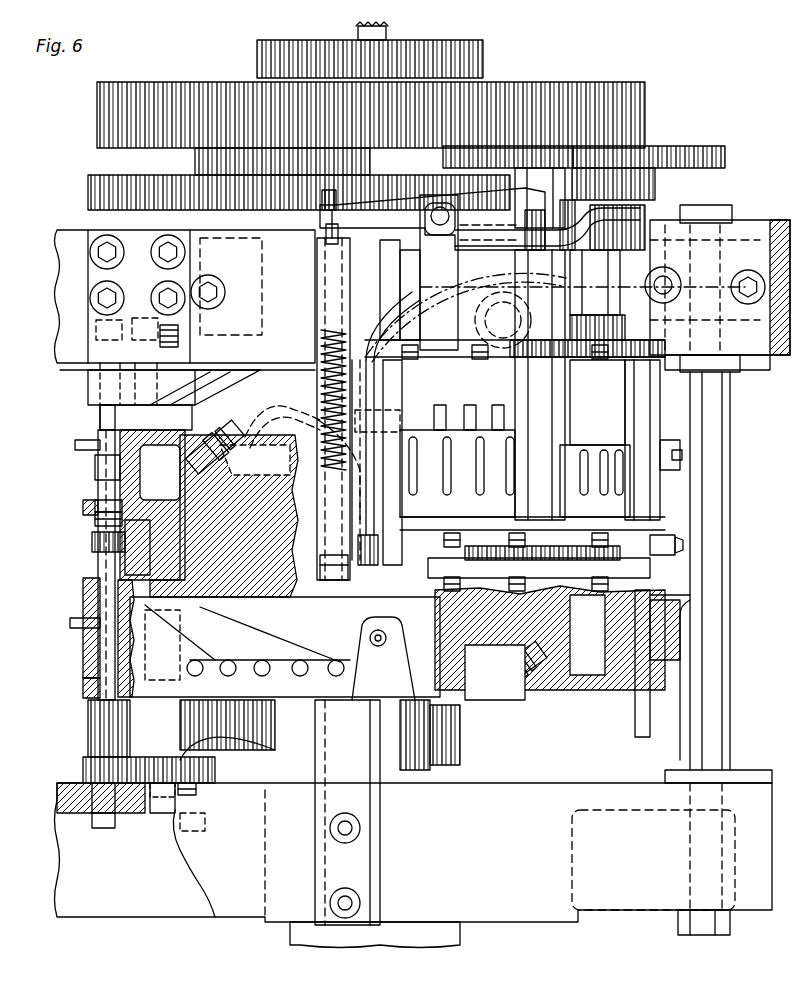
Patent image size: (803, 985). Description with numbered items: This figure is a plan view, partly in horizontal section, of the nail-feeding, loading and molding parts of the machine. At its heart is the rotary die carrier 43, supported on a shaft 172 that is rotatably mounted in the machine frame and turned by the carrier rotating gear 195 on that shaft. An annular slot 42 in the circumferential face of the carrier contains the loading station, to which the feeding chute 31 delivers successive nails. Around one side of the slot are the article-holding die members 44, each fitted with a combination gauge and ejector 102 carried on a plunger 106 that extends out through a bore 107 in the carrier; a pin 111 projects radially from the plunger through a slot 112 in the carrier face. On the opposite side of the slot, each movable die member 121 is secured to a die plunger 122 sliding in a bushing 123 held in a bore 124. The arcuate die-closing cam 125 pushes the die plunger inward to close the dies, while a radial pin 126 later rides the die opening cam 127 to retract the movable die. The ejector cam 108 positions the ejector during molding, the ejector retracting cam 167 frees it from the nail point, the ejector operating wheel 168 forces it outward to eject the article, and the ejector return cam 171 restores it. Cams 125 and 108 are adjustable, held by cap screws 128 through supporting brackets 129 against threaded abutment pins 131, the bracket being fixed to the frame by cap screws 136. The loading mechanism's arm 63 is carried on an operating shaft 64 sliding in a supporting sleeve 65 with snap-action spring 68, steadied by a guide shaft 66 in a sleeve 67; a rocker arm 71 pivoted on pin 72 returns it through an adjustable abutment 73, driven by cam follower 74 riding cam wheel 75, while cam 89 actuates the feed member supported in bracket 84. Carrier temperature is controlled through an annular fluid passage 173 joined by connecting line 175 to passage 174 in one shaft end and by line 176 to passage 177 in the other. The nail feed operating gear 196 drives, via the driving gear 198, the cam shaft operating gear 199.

The passage 177 is at (386, 32).
The carrier rotating gear 195 is at (590, 92).
The cam shaft operating gear 199 is at (572, 158).
The driving gear 198 is at (724, 148).
The nail feed operating gear 196 is at (100, 188).
The cam follower 74 is at (625, 164).
The cam wheel 75 is at (645, 215).
The pin 72 is at (432, 214).
The adjustable abutment 73 is at (322, 222).
The operating shaft 64 is at (326, 248).
The ejector cam 108 is at (88, 390).
The bore 107 is at (132, 440).
The ejector operating wheel 168 is at (660, 400).
The ejector return cam 171 is at (670, 440).
The supporting sleeve 65 is at (317, 293).
The helical spring 68 is at (327, 345).
The sleeve 67 is at (326, 560).
The guide shaft 66 is at (358, 560).
The second arm 63 is at (356, 566).
The rocker arm 71 is at (404, 248).
The feeding chute 31 is at (416, 328).
The plunger 106 is at (498, 405).
The slot 112 is at (448, 480).
The pin 111 is at (510, 480).
The cam 89 is at (650, 565).
The die plunger 122 is at (100, 645).
The combination gauge and ejector 102 is at (95, 504).
The article-holding die member 44 is at (95, 520).
The movable die member 121 is at (92, 542).
The slot 42 is at (125, 558).
The bushing 123 is at (83, 612).
The bore 124 is at (83, 688).
The pin 126 is at (70, 624).
The annular fluid passage 173 is at (205, 428).
The line 176 is at (272, 410).
The ejector retracting cam 167 is at (296, 395).
The die opening cam 127 is at (380, 608).
The rotary die carrier 43 is at (610, 690).
The connecting line 175 is at (500, 692).
The bracket 84 is at (402, 640).
The die-closing cam 125 is at (88, 734).
The shaft 172 is at (462, 712).
The supporting bracket 129 is at (83, 770).
The cap screws 136 is at (103, 830).
The cap screws 128 is at (165, 810).
The abutment pins 131 is at (196, 790).
The fluid passage 174 is at (385, 895).